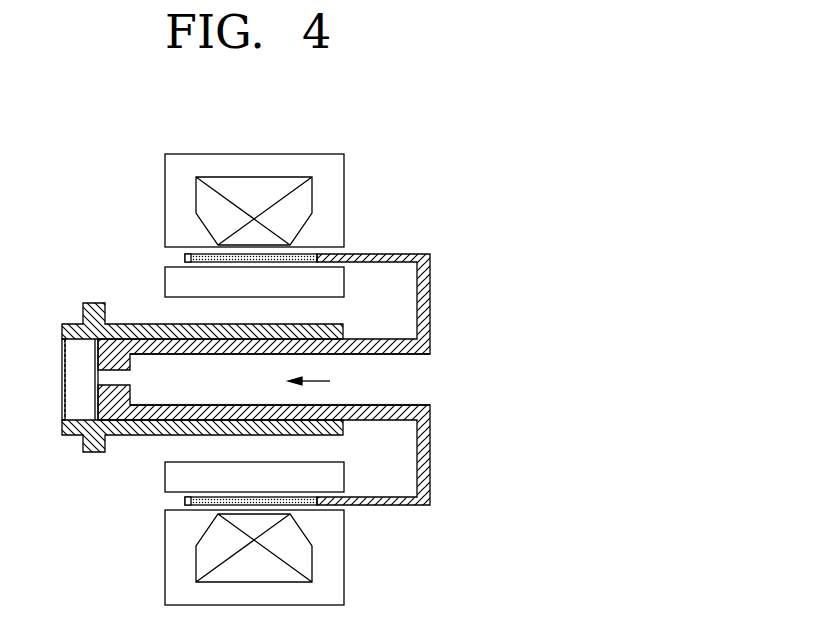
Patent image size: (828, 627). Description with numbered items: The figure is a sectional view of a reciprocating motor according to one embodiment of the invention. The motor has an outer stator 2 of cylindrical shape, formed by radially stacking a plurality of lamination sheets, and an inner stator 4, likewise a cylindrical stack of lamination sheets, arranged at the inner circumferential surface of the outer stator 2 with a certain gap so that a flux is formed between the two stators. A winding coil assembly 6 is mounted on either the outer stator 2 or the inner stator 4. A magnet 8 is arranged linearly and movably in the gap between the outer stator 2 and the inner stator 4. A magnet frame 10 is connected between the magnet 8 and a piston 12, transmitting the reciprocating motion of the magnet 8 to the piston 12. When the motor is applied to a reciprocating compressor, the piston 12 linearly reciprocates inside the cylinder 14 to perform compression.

The outer stator 2 is at (188, 163).
The inner stator 4 is at (232, 283).
The winding coil assembly 6 is at (260, 188).
The magnet 8 is at (300, 254).
The magnet frame 10 is at (403, 256).
The piston 12 is at (392, 354).
The cylinder 14 is at (132, 322).